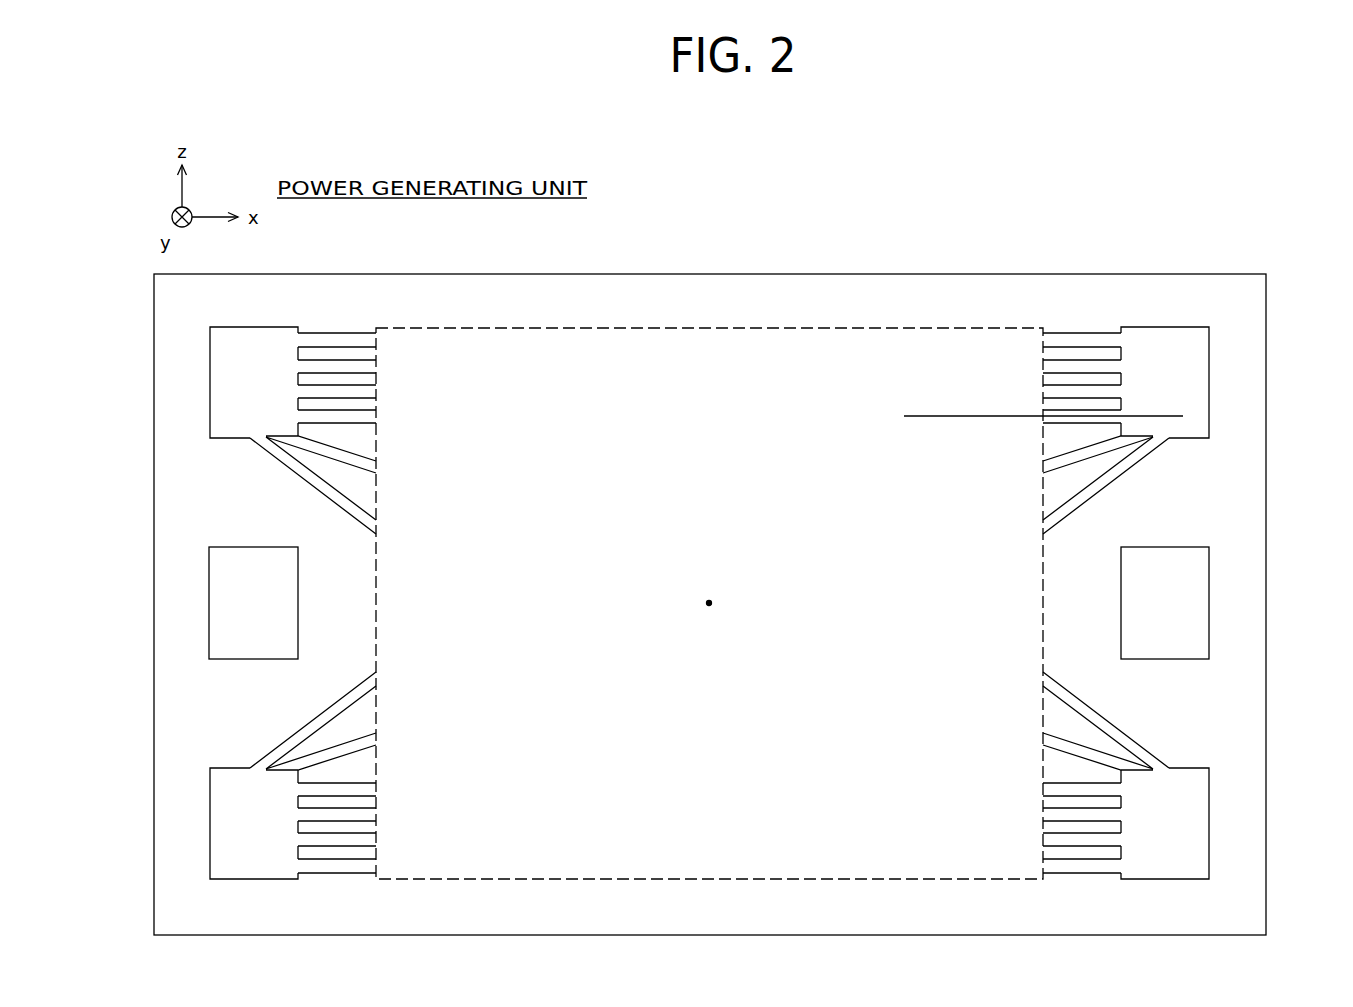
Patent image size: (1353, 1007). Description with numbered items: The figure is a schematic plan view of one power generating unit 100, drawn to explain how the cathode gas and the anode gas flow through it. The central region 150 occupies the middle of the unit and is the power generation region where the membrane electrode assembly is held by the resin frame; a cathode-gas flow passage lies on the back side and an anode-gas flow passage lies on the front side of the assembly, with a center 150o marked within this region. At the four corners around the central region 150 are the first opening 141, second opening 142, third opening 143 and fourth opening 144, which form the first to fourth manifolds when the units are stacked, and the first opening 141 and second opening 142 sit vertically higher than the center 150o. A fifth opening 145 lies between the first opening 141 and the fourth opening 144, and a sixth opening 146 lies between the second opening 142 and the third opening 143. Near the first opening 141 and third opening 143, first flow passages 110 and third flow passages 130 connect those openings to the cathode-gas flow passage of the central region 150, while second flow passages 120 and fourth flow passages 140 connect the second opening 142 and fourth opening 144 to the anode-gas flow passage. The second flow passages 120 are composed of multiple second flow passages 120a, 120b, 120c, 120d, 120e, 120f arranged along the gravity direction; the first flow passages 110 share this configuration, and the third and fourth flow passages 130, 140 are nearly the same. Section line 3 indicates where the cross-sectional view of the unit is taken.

The power generating unit 100 is at (1248, 250).
The first flow passages 110 is at (288, 484).
The second flow passages 120 is at (1080, 438).
The second flow passage 120a is at (1103, 492).
The second flow passage 120b is at (1037, 467).
The second flow passage 120c is at (1037, 422).
The second flow passage 120d is at (1033, 392).
The second flow passage 120e is at (1033, 367).
The second flow passage 120f is at (1033, 343).
The third flow passages 130 is at (1137, 725).
The fourth flow passages 140 is at (285, 722).
The first opening 141 is at (233, 398).
The second opening 142 is at (1145, 397).
The third opening 143 is at (1145, 846).
The fourth opening 144 is at (231, 849).
The fifth opening 145 is at (230, 618).
The sixth opening 146 is at (1145, 618).
The central region 150 is at (908, 328).
The center of central region 150o is at (717, 592).
The section line of FIG. 3 is at (904, 418).